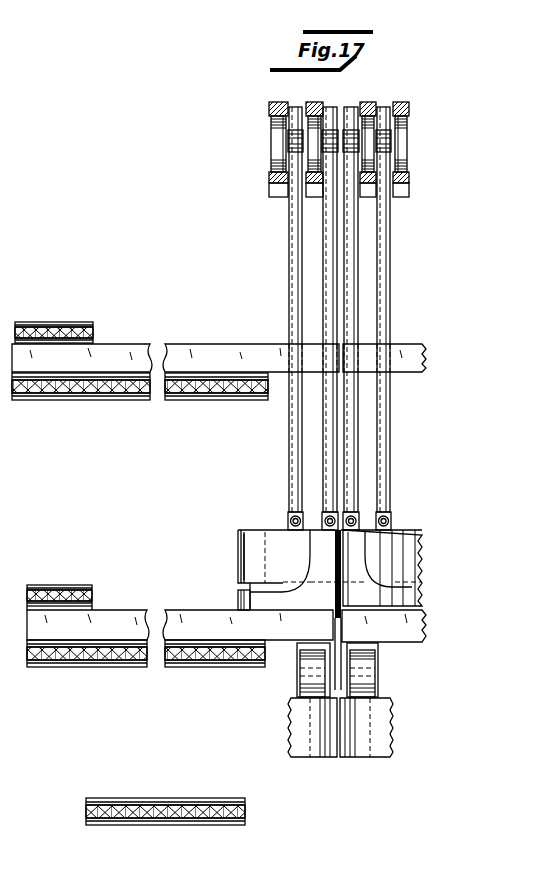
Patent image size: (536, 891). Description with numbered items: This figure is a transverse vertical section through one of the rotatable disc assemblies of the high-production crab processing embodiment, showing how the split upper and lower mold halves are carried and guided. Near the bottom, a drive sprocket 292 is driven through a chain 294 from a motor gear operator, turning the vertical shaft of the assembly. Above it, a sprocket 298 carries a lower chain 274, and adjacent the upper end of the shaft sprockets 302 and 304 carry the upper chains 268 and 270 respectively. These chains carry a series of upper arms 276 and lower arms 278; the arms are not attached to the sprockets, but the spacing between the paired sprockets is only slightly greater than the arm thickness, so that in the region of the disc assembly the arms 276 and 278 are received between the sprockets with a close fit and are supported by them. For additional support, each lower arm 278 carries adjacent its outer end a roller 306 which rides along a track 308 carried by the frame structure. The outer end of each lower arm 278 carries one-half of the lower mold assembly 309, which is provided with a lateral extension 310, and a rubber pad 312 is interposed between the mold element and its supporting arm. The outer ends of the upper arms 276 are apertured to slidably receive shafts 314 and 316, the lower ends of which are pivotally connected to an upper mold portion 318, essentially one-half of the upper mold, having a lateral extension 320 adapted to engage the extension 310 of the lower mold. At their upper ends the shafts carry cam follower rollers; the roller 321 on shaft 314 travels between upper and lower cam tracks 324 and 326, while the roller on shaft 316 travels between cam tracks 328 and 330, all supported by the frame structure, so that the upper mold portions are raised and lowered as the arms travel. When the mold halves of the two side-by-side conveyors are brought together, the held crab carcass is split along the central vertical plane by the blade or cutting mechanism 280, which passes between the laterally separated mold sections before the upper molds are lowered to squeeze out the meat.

The upper cam track 324 is at (273, 104).
The cam follower roller 321 is at (286, 131).
The lower cam track 326 is at (271, 177).
The cam track 328 is at (314, 103).
The cam track 330 is at (314, 189).
The shaft 314 is at (297, 452).
The shaft 316 is at (332, 490).
The sprocket 304 is at (46, 330).
The upper chain 270 is at (82, 328).
The upper arm 276 is at (192, 352).
The upper chain 268 is at (123, 395).
The sprocket 302 is at (228, 392).
The lateral extension 320 is at (305, 561).
The blade or cutting mechanism 280 is at (335, 557).
The upper mold portion 318 is at (255, 573).
The lateral extension 310 is at (245, 598).
The lower mold assembly 309 is at (374, 566).
The rubber pad 312 is at (288, 614).
The lower arm 278 is at (172, 622).
The lower chain 274 is at (128, 666).
The sprocket 298 is at (263, 662).
The roller 306 is at (298, 683).
The track 308 is at (305, 735).
The chain 294 is at (147, 805).
The drive sprocket 292 is at (157, 822).